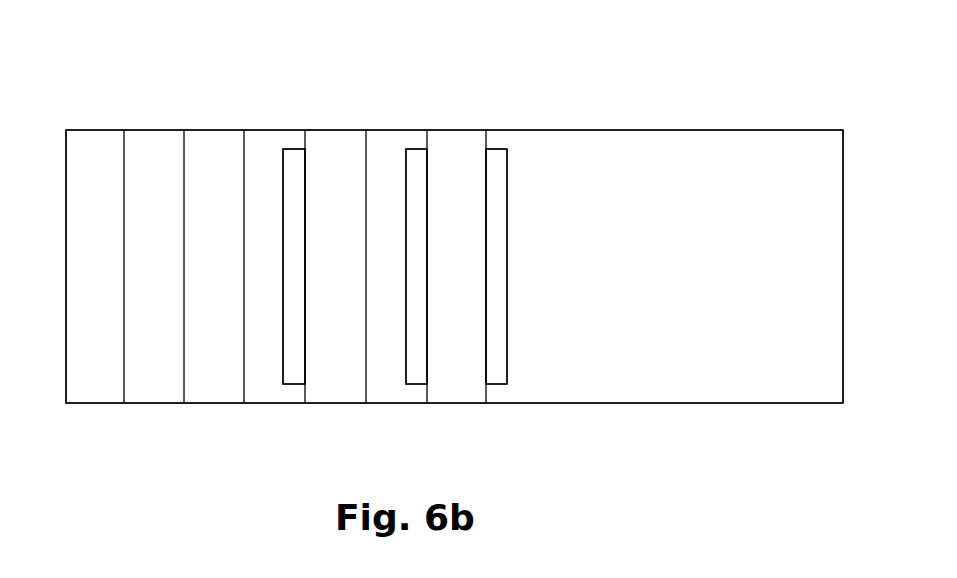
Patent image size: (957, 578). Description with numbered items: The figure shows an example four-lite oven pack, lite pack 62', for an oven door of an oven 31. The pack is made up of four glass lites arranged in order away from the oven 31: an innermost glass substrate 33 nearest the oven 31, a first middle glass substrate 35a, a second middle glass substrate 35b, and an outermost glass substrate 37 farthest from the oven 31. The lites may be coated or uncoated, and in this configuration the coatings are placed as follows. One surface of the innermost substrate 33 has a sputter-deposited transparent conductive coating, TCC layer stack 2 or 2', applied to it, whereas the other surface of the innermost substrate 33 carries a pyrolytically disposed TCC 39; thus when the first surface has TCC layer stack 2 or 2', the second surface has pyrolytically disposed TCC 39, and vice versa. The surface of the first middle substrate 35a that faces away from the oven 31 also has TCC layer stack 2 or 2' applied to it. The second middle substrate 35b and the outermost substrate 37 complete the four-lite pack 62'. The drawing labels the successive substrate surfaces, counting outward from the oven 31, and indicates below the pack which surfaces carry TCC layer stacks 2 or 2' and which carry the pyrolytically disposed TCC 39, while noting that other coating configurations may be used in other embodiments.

The lite pack 62' is at (454, 204).
The oven 31 is at (454, 266).
The innermost glass substrate 33 is at (457, 129).
The first middle glass substrate 35a is at (336, 129).
The second middle glass substrate 35b is at (213, 129).
The outermost glass substrate 37 is at (95, 129).
The TCC layer stack 2 is at (410, 310).
The TCC layer stack 2' is at (294, 266).
The pyrolytically disposed TCC 39 is at (456, 266).